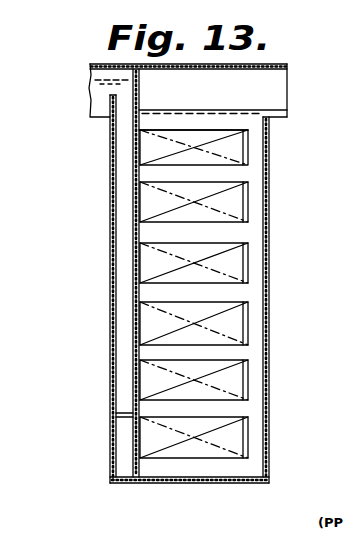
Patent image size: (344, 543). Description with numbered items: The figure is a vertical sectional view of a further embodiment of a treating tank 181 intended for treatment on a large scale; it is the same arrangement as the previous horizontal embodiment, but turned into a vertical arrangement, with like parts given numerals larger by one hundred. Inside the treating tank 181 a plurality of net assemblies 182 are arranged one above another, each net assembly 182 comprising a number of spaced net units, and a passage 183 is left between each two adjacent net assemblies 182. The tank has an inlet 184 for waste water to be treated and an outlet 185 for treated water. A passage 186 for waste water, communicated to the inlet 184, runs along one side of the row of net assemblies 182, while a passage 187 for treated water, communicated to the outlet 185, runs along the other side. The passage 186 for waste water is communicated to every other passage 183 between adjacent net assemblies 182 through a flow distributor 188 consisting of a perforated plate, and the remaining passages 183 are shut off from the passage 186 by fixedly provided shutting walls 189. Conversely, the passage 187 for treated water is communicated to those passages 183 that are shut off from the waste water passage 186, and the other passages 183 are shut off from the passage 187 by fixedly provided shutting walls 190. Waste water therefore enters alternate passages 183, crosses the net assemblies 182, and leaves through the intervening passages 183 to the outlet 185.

The treating tank 181 is at (113, 227).
The net assembly 182 is at (230, 148).
The passage 183 is at (228, 233).
The inlet 184 is at (97, 79).
The outlet 185 is at (273, 92).
The passage for waste water 186 is at (122, 214).
The passage for treated water 187 is at (252, 270).
The flow distributor 188 is at (137, 172).
The shutting wall 189 is at (137, 245).
The shutting wall 190 is at (245, 297).